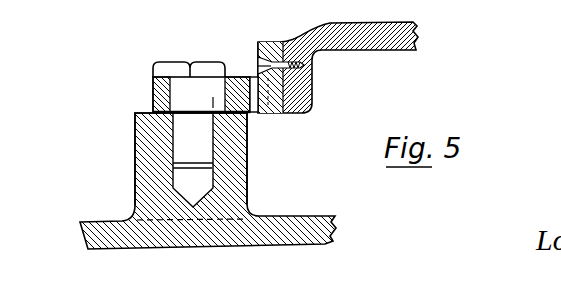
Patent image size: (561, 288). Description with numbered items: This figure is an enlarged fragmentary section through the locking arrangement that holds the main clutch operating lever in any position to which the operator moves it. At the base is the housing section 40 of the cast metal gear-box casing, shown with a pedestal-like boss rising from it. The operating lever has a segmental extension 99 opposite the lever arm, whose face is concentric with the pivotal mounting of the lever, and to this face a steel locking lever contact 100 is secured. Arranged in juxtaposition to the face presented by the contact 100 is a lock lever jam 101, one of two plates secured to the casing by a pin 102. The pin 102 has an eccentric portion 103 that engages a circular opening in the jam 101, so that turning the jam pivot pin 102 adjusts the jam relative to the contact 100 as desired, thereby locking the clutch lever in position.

The upper section of housing 40 is at (305, 226).
The segmental extension 99 is at (386, 43).
The locking lever contact 100 is at (270, 46).
The lock lever jam 101 is at (232, 78).
The pin 102 is at (173, 72).
The eccentric portion 103 is at (243, 119).